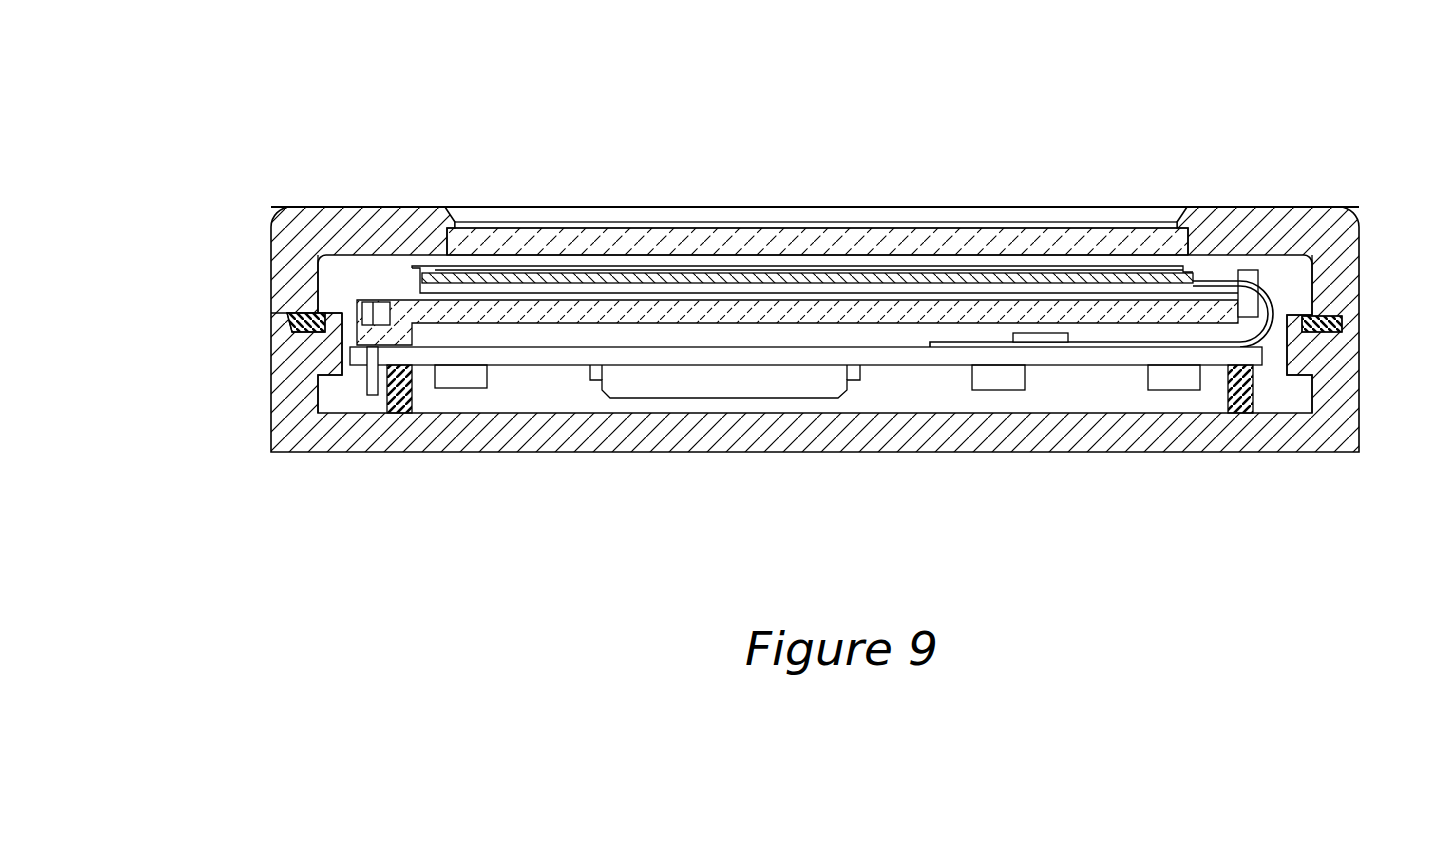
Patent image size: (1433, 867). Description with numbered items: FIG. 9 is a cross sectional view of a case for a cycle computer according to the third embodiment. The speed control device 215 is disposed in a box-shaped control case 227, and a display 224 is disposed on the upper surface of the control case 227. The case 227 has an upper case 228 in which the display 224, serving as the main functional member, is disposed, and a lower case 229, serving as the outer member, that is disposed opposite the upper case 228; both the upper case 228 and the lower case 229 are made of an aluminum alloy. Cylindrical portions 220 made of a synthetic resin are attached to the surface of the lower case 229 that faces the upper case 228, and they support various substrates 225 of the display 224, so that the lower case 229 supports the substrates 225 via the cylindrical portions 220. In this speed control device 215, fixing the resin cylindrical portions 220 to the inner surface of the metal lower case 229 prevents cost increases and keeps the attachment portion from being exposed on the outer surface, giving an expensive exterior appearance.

The speed control device 215 is at (1068, 155).
The cylindrical portions 220 is at (412, 390).
The display 224 is at (690, 207).
The substrates 225 is at (1100, 357).
The control case 227 is at (1380, 312).
The upper case 228 is at (283, 253).
The lower case 229 is at (285, 393).